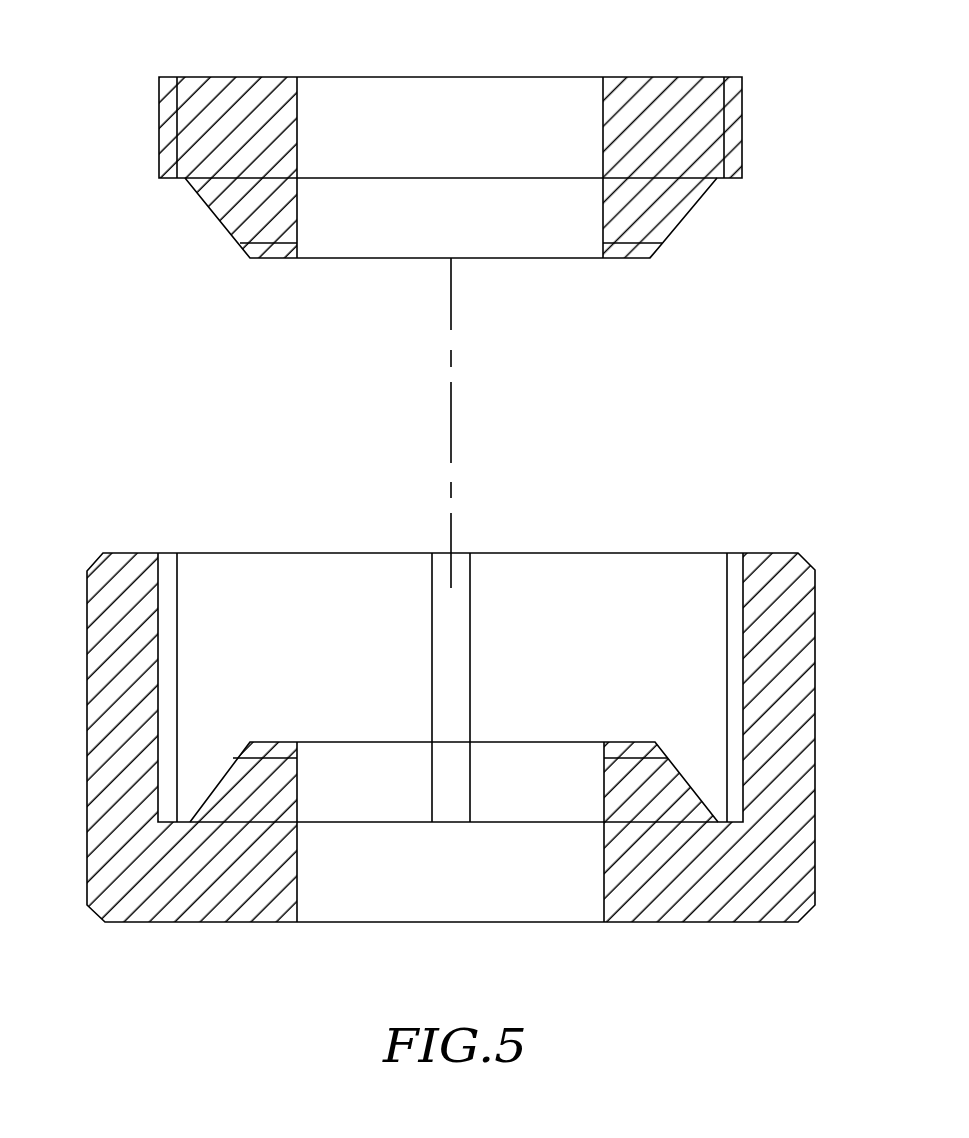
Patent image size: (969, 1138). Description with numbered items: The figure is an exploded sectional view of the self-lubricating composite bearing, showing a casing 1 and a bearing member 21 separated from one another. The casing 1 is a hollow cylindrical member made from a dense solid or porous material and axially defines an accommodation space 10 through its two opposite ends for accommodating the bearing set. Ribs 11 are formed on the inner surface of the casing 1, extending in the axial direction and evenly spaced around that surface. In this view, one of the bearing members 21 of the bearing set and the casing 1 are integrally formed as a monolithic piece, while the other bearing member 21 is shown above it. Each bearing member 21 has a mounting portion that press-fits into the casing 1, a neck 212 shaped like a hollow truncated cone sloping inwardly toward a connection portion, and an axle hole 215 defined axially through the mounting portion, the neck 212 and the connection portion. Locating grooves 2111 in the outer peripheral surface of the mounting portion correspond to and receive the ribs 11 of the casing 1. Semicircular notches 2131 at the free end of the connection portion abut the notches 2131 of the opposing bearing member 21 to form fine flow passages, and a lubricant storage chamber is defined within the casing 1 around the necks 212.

The casing 1 is at (477, 695).
The accommodation space 10 is at (334, 630).
The ribs 11 is at (735, 570).
The bearing member 21 is at (436, 525).
The locating grooves 2111 is at (170, 112).
The neck 212 is at (657, 212).
The semicircular notches 2131 is at (255, 247).
The axle hole 215 is at (455, 140).